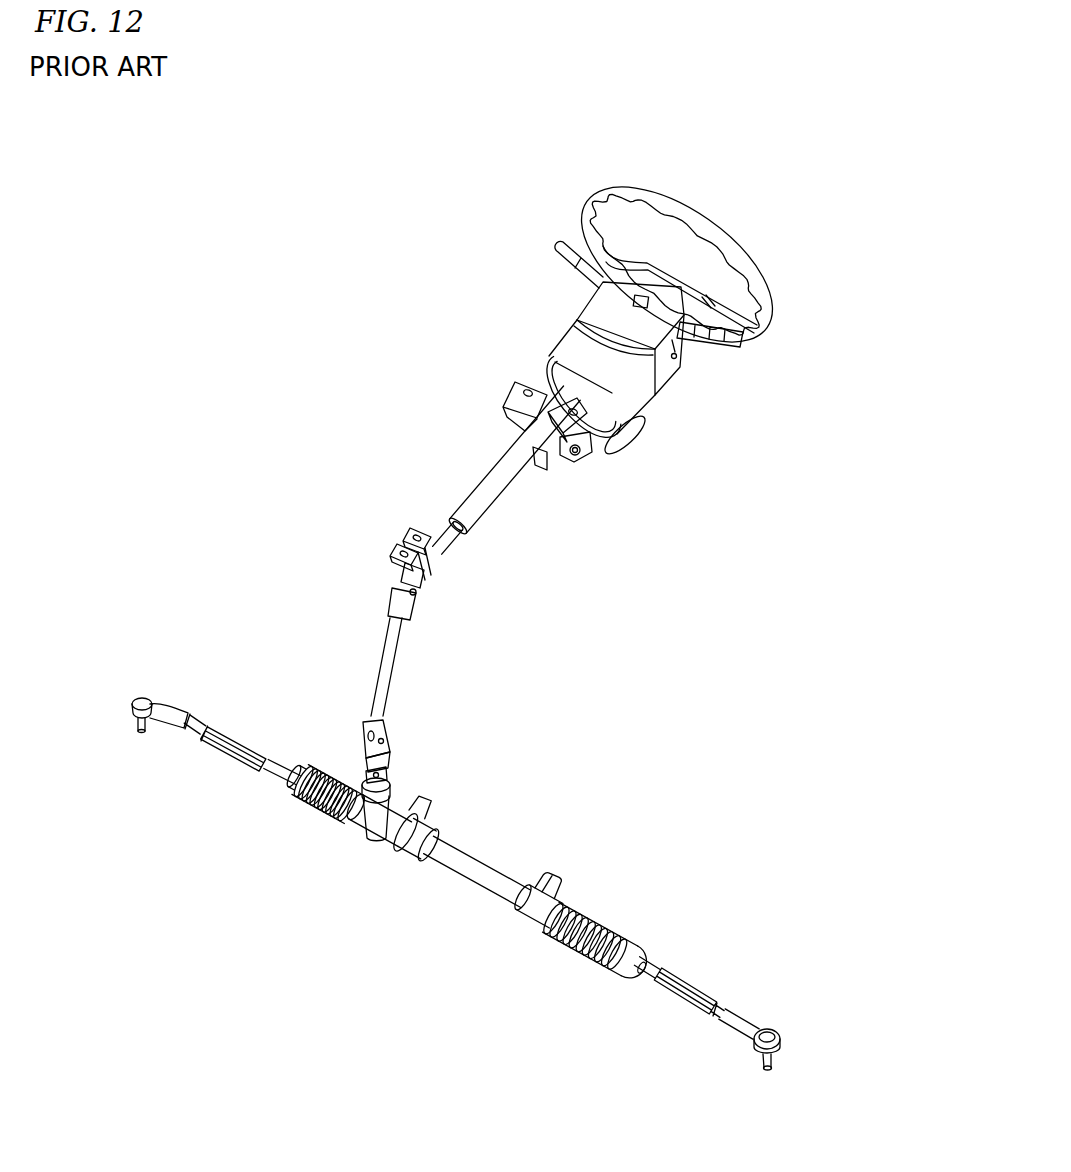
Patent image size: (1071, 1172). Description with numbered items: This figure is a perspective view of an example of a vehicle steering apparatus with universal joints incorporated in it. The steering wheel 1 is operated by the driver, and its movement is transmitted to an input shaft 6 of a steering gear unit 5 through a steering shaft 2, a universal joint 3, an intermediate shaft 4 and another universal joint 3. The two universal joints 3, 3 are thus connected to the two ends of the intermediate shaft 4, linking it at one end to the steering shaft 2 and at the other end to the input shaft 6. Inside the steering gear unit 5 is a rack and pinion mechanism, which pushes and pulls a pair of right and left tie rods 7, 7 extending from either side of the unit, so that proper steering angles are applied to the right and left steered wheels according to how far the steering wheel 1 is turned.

The steering wheel 1 is at (683, 214).
The steering shaft 2 is at (440, 550).
The universal joint 3 is at (399, 580).
The intermediate shaft 4 is at (392, 668).
The steering gear unit 5 is at (375, 841).
The input shaft 6 is at (384, 775).
The tie rod 7 is at (232, 758).